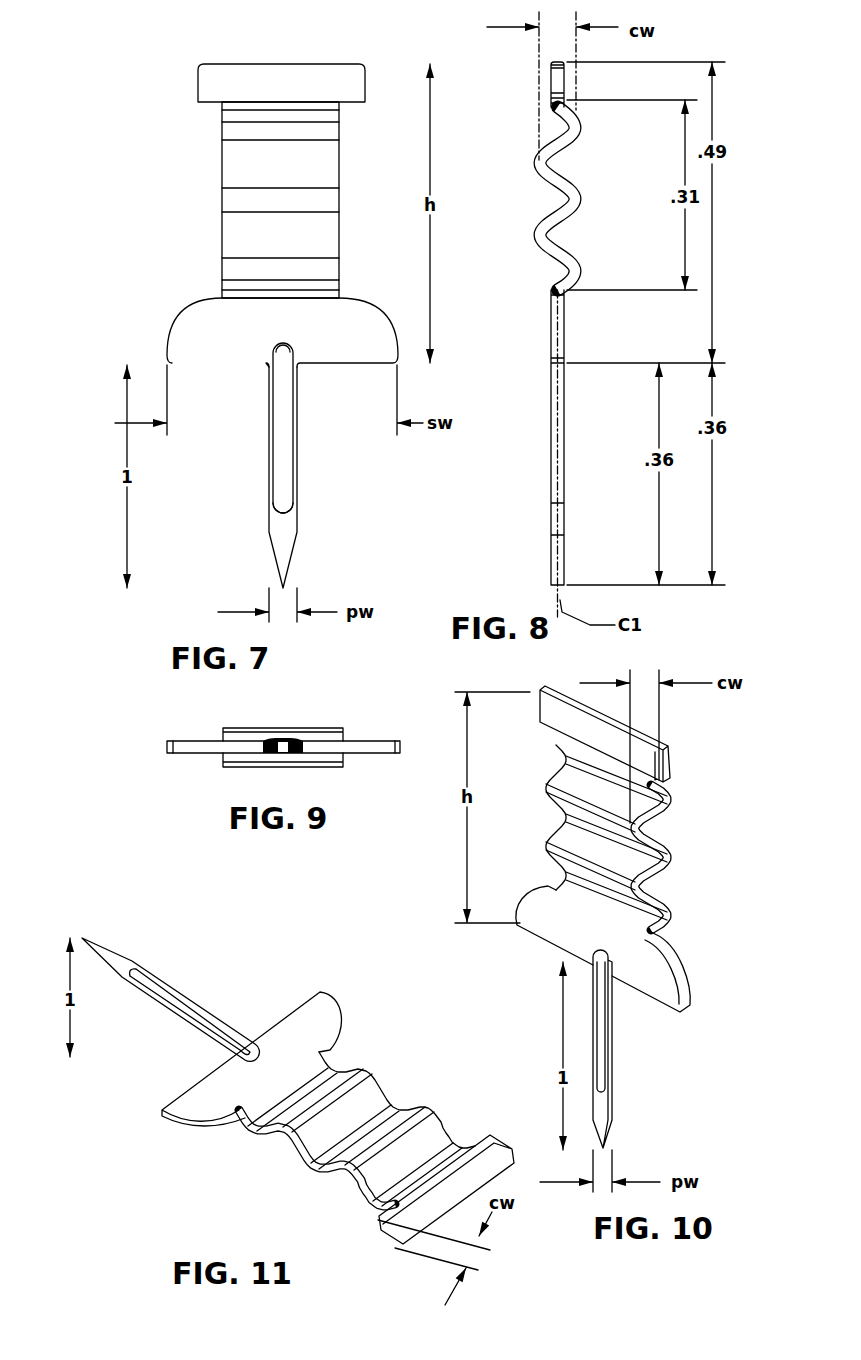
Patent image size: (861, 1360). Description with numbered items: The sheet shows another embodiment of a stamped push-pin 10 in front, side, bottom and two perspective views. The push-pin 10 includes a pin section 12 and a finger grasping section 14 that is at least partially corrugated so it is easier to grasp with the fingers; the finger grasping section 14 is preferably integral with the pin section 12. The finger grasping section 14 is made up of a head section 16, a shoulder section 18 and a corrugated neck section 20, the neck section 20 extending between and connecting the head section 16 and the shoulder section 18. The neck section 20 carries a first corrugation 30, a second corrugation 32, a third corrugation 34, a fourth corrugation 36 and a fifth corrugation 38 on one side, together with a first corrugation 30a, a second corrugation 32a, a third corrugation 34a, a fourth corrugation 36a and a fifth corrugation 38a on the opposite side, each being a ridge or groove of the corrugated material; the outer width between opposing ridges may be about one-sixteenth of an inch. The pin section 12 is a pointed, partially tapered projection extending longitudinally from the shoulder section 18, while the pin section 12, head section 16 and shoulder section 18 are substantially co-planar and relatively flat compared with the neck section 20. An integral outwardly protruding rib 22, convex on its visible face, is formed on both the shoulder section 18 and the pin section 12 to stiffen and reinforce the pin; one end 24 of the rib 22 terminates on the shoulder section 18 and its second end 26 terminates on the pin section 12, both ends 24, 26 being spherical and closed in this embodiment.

In FIG. 9, the push-pin 10 is at (301, 736).
In FIG. 7, the pin section 12 is at (270, 588).
In FIG. 9, the pin section 12 is at (281, 760).
In FIG. 10, the pin section 12 is at (590, 1150).
In FIG. 11, the pin section 12 is at (210, 1057).
In FIG. 7, the finger grasping section 14 is at (440, 363).
In FIG. 10, the finger grasping section 14 is at (773, 748).
In FIG. 11, the finger grasping section 14 is at (385, 1248).
In FIG. 7, the head section 16 is at (281, 83).
In FIG. 8, the head section 16 is at (551, 78).
In FIG. 10, the head section 16 is at (605, 734).
In FIG. 11, the head section 16 is at (446, 1189).
In FIG. 7, the shoulder section 18 is at (282, 332).
In FIG. 8, the shoulder section 18 is at (583, 325).
In FIG. 9, the shoulder section 18 is at (197, 755).
In FIG. 10, the shoulder section 18 is at (603, 949).
In FIG. 11, the shoulder section 18 is at (251, 1059).
In FIG. 7, the corrugated neck section 20 is at (222, 298).
In FIG. 8, the corrugated neck section 20 is at (575, 185).
In FIG. 10, the corrugated neck section 20 is at (755, 930).
In FIG. 11, the corrugated neck section 20 is at (302, 1165).
In FIG. 7, the outwardly protruding rib 22 is at (283, 465).
In FIG. 8, the outwardly protruding rib 22 is at (543, 440).
In FIG. 10, the outwardly protruding rib 22 is at (602, 1049).
In FIG. 11, the outwardly protruding rib 22 is at (170, 999).
In FIG. 7, the end of rib 24 is at (283, 345).
In FIG. 8, the end of rib 24 is at (552, 342).
In FIG. 10, the end of rib 24 is at (598, 950).
In FIG. 11, the end of rib 24 is at (258, 1047).
In FIG. 7, the second end of rib 26 is at (290, 520).
In FIG. 8, the second end of rib 26 is at (552, 518).
In FIG. 10, the second end of rib 26 is at (612, 1100).
In FIG. 11, the second end of rib 26 is at (125, 970).
In FIG. 8, the first corrugation 30 is at (575, 262).
In FIG. 10, the first corrugation 30 is at (668, 917).
In FIG. 11, the first corrugation 30 is at (256, 1133).
In FIG. 8, the first corrugation 30a is at (558, 268).
In FIG. 10, the first corrugation 30a is at (558, 880).
In FIG. 11, the first corrugation 30a is at (348, 1065).
In FIG. 8, the second corrugation 32 is at (540, 225).
In FIG. 10, the second corrugation 32 is at (550, 852).
In FIG. 11, the second corrugation 32 is at (366, 1072).
In FIG. 8, the second corrugation 32a is at (563, 235).
In FIG. 10, the second corrugation 32a is at (645, 885).
In FIG. 11, the second corrugation 32a is at (285, 1148).
In FIG. 8, the third corrugation 34 is at (575, 185).
In FIG. 10, the third corrugation 34 is at (668, 855).
In FIG. 11, the third corrugation 34 is at (302, 1165).
In FIG. 8, the third corrugation 34a is at (552, 195).
In FIG. 10, the third corrugation 34a is at (556, 823).
In FIG. 11, the third corrugation 34a is at (395, 1106).
In FIG. 8, the fourth corrugation 36 is at (540, 165).
In FIG. 10, the fourth corrugation 36 is at (550, 787).
In FIG. 11, the fourth corrugation 36 is at (428, 1108).
In FIG. 8, the fourth corrugation 36a is at (563, 157).
In FIG. 10, the fourth corrugation 36a is at (640, 826).
In FIG. 11, the fourth corrugation 36a is at (338, 1180).
In FIG. 8, the fifth corrugation 38 is at (578, 120).
In FIG. 10, the fifth corrugation 38 is at (668, 800).
In FIG. 11, the fifth corrugation 38 is at (380, 1210).
In FIG. 8, the fifth corrugation 38a is at (548, 124).
In FIG. 10, the fifth corrugation 38a is at (562, 752).
In FIG. 11, the fifth corrugation 38a is at (452, 1143).